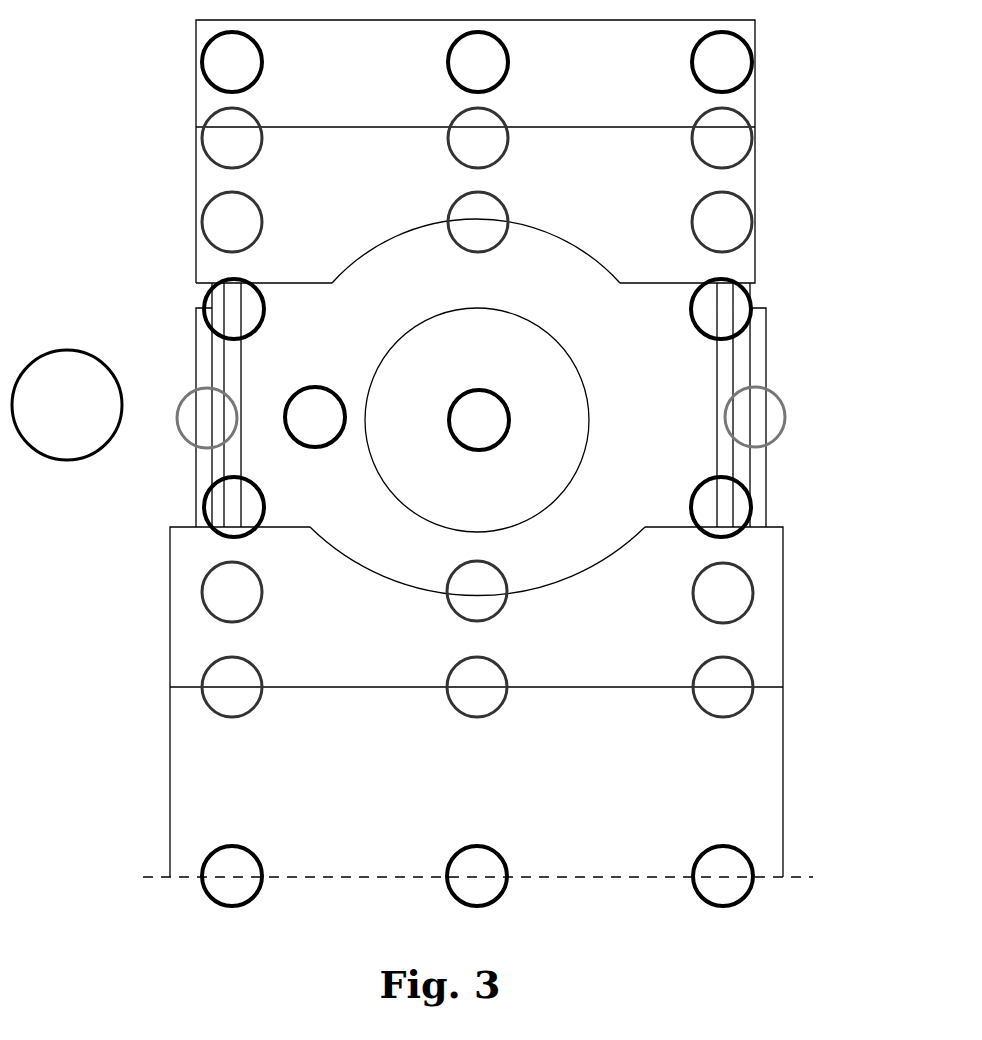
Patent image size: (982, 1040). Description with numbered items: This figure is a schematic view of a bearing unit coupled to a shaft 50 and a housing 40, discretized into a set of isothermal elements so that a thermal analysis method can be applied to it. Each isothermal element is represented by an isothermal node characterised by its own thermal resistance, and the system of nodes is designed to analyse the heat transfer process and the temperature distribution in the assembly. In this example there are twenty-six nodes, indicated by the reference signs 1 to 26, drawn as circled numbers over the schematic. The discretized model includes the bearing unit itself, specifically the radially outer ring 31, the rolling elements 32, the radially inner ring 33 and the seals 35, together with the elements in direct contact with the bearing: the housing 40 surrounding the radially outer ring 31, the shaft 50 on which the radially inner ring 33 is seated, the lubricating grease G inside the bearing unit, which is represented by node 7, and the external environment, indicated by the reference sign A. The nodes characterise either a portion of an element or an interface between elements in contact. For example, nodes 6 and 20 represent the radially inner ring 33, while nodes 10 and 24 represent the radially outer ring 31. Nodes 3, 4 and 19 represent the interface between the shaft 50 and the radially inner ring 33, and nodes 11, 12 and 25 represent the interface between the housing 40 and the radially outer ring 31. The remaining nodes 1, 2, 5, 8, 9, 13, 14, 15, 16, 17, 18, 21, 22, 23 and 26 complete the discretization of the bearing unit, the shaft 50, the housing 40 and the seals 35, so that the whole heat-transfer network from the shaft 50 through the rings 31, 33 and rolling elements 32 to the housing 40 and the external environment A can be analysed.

The isothermal node 1 is at (477, 876).
The isothermal node 2 is at (723, 876).
The isothermal node 3 is at (477, 687).
The isothermal node 4 is at (723, 687).
The isothermal node 5 is at (477, 591).
The isothermal node 6 is at (723, 593).
The isothermal node 7 is at (315, 417).
The isothermal node 8 is at (479, 420).
The isothermal node 9 is at (478, 222).
The isothermal node 10 is at (722, 222).
The isothermal node 11 is at (478, 138).
The isothermal node 12 is at (722, 138).
The isothermal node 13 is at (478, 62).
The isothermal node 14 is at (722, 62).
The isothermal node 15 is at (721, 309).
The isothermal node 16 is at (721, 507).
The isothermal node 17 is at (755, 417).
The isothermal node 18 is at (232, 876).
The isothermal node 19 is at (232, 687).
The isothermal node 20 is at (232, 592).
The isothermal node 21 is at (234, 507).
The isothermal node 22 is at (234, 309).
The isothermal node 23 is at (207, 418).
The isothermal node 24 is at (232, 222).
The isothermal node 25 is at (232, 138).
The isothermal node 26 is at (232, 62).
The radially outer ring 31 is at (160, 211).
The rolling elements 32 is at (487, 368).
The radially inner ring 33 is at (146, 625).
The seals 35 is at (786, 342).
The housing 40 is at (172, 75).
The shaft 50 is at (138, 790).
The lubricating grease G is at (338, 338).
The external environment A is at (67, 405).